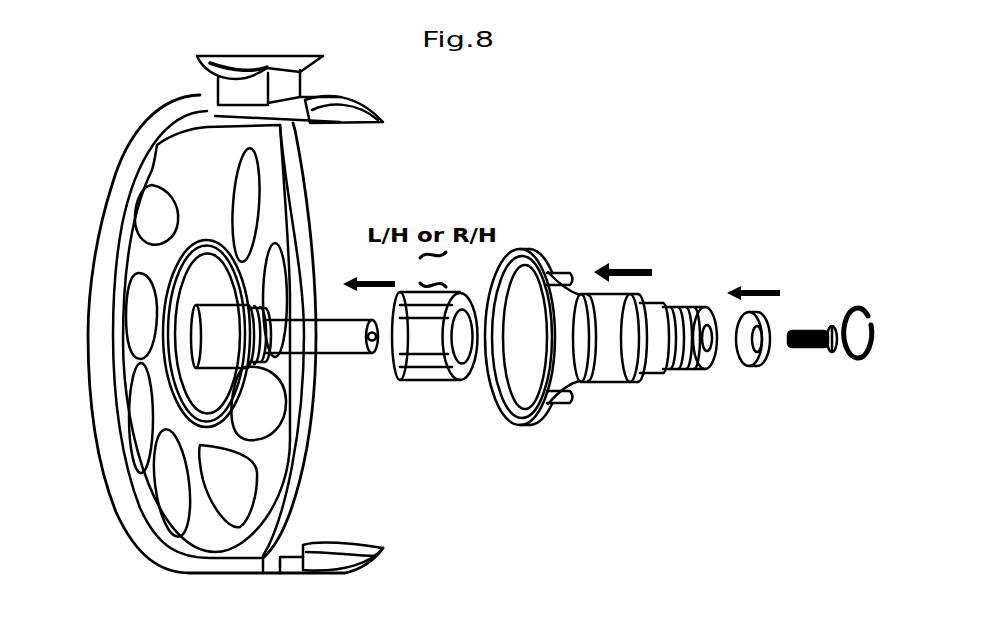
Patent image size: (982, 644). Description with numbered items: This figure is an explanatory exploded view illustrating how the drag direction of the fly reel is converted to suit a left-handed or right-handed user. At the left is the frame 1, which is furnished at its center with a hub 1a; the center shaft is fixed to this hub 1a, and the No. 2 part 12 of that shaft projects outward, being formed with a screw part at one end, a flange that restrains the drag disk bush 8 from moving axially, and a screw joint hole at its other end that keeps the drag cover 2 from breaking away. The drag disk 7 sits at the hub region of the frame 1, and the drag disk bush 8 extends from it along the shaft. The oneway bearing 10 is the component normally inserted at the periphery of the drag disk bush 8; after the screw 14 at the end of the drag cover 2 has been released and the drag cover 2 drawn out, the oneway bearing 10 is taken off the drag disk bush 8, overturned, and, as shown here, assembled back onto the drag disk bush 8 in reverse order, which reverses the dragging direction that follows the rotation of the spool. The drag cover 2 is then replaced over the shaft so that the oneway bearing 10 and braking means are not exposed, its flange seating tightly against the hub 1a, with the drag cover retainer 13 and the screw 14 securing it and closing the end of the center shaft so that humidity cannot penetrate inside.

The frame 1 is at (197, 497).
The hub 1a is at (163, 273).
The drag cover 2 is at (567, 303).
The drag disk 7 is at (207, 242).
The drag disk bush 8 is at (232, 318).
The oneway bearing 10 is at (430, 383).
The No. 2 part 12 is at (336, 343).
The drag cover retainer 13 is at (752, 367).
The screw 14 is at (813, 350).